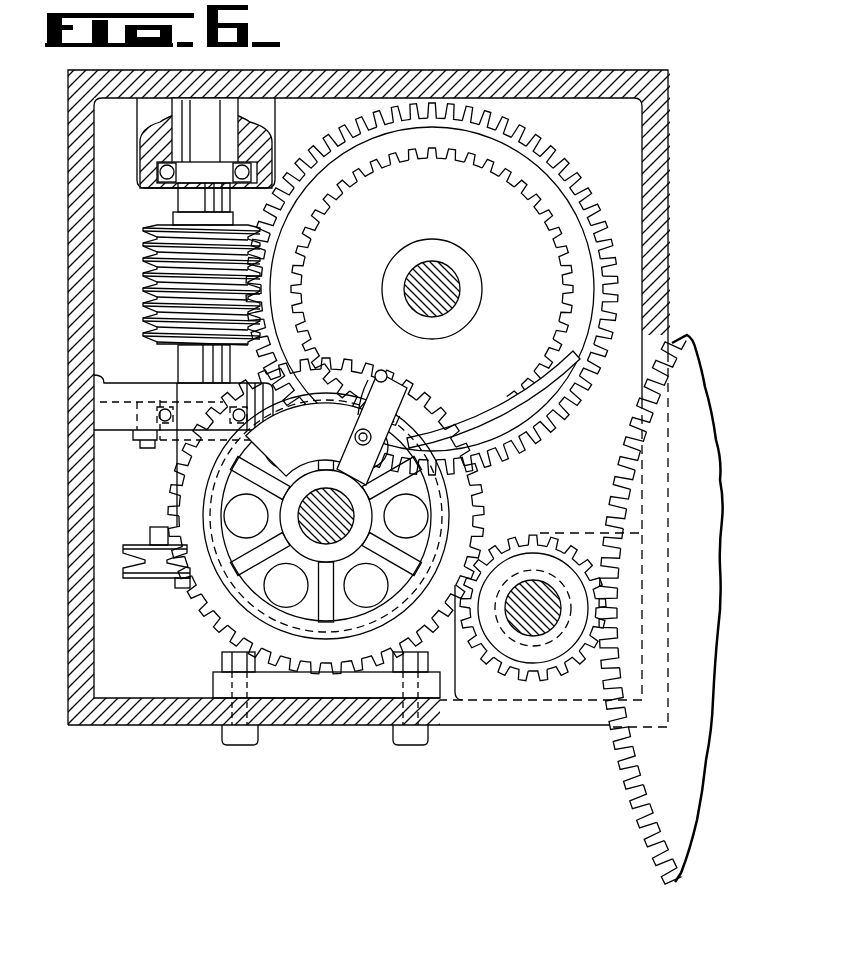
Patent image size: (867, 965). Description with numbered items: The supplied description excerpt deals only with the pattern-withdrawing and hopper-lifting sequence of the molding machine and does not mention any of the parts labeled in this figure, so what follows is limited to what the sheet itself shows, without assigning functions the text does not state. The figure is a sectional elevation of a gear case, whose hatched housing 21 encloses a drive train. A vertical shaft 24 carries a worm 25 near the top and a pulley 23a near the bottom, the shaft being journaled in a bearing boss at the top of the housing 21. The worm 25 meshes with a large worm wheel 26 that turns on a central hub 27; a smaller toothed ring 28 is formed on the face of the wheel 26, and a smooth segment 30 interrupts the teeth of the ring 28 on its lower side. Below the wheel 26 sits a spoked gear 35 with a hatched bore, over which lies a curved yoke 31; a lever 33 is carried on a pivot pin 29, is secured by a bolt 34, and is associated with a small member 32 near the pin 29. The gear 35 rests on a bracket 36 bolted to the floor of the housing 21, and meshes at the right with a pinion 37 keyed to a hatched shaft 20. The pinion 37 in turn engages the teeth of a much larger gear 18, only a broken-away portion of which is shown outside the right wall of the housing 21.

The large gear 18 is at (645, 773).
The shaft 20 is at (517, 628).
The housing 21 is at (652, 162).
The pulley 23a is at (160, 574).
The worm shaft 24 is at (186, 357).
The worm 25 is at (160, 297).
The worm wheel gear 26 is at (572, 181).
The hub shaft 27 is at (462, 292).
The inner ratchet gear 28 is at (562, 232).
The pivot pin 29 is at (388, 378).
The cam segment 30 is at (450, 432).
The yoke arm 31 is at (307, 403).
The spring 32 is at (368, 382).
The pawl lever 33 is at (394, 403).
The bolt 34 is at (370, 441).
The spoked gear 35 is at (318, 530).
The mounting bracket 36 is at (333, 655).
The pinion gear 37 is at (540, 675).